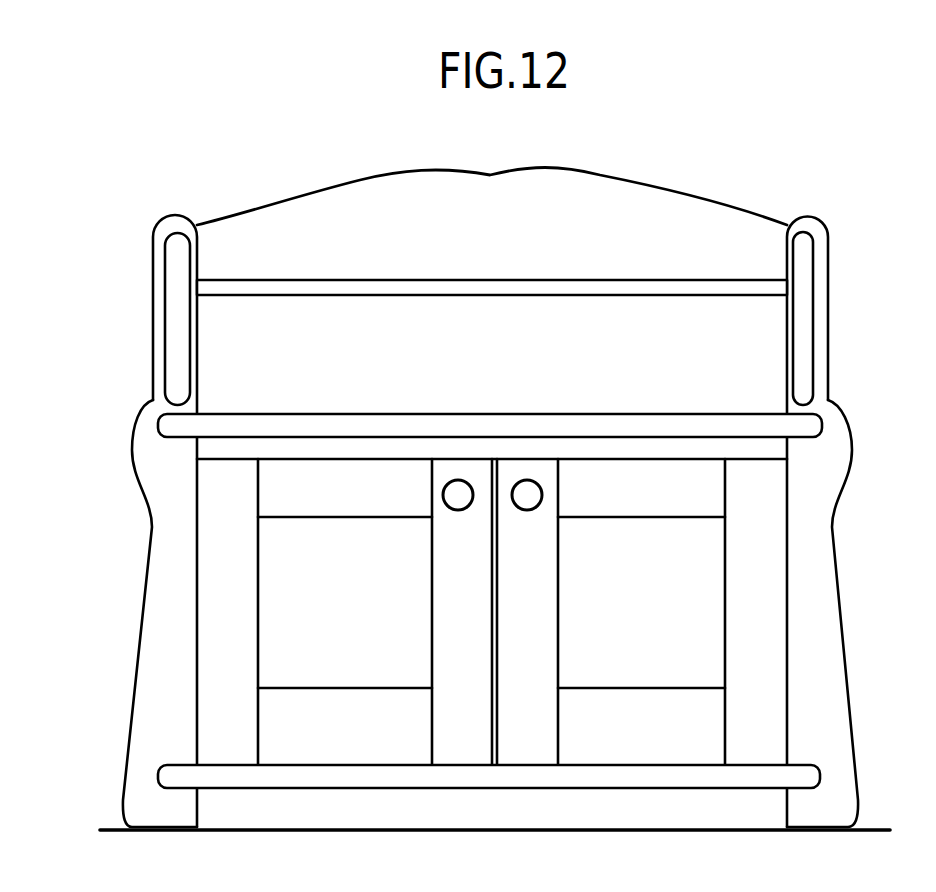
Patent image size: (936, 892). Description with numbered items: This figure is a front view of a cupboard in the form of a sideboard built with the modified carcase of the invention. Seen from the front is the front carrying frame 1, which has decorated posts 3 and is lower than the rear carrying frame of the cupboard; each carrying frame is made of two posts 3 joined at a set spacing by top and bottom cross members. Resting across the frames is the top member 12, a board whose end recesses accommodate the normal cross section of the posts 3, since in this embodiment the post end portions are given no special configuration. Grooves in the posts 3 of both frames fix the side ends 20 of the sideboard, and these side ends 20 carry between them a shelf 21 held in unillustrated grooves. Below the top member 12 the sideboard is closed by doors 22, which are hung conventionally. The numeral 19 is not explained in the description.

The front carrying frame 1 is at (772, 815).
The post 3 is at (141, 603).
The top member 12 is at (749, 422).
The crest back panel 19 is at (620, 182).
The side end 20 is at (803, 287).
The shelf 21 is at (690, 282).
The door 22 is at (533, 750).